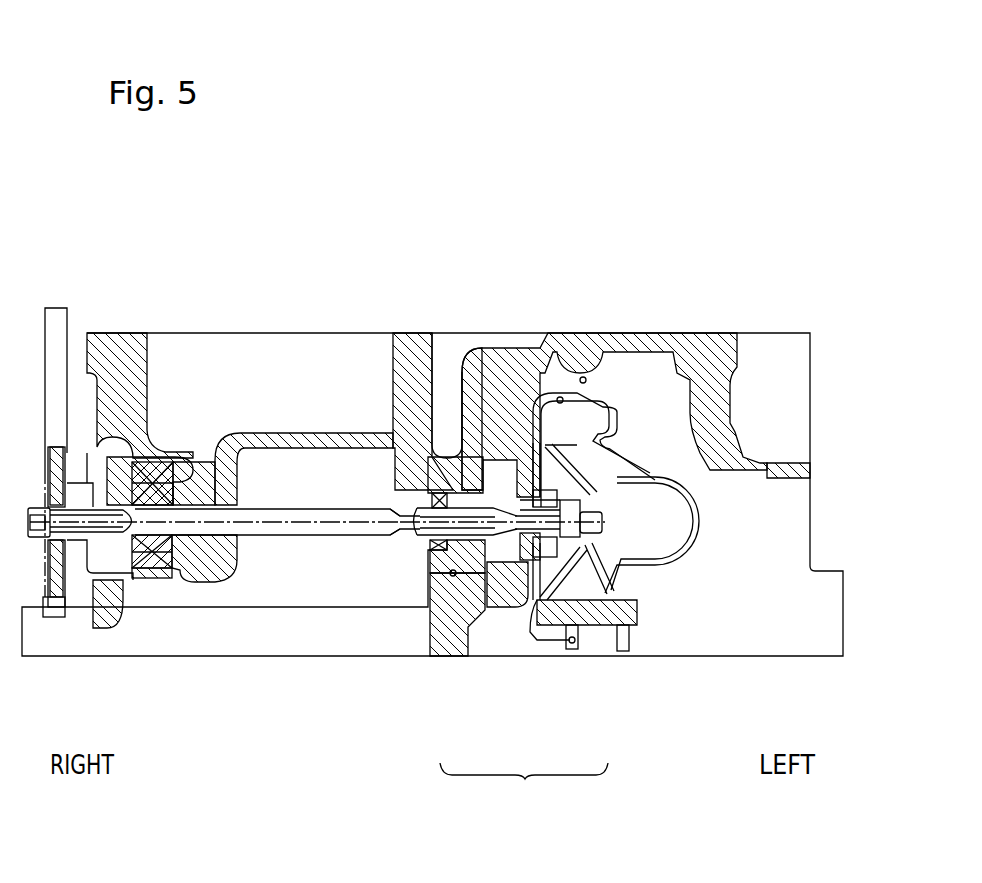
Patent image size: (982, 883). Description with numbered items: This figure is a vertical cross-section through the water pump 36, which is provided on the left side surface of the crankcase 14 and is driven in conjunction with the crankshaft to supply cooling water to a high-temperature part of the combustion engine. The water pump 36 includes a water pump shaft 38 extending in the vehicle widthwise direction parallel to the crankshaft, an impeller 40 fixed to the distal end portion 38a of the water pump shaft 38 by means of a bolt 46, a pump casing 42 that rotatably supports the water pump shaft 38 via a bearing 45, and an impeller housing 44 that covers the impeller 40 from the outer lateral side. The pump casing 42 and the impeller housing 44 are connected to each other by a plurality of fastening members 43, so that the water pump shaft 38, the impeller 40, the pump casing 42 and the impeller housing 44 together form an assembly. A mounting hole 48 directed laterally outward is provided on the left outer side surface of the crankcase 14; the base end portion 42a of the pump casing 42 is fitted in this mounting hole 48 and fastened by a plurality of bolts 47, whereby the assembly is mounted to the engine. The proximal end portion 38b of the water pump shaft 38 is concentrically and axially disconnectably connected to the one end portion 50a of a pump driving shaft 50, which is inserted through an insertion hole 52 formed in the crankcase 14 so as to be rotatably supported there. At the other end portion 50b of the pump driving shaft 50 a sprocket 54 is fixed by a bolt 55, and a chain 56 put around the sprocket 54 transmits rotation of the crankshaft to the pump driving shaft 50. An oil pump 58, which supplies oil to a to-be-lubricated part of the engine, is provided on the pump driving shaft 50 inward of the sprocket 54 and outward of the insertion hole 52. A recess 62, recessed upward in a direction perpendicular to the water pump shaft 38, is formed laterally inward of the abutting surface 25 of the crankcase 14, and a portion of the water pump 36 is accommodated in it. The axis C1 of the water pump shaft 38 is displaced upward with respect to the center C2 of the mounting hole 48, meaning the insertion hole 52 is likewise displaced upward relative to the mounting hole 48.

The crankcase 14 is at (363, 664).
The abutting surface 25 is at (814, 462).
The water pump 36 is at (524, 790).
The water pump shaft 38 is at (497, 545).
The distal end portion 38a is at (582, 507).
The proximal end portion 38b is at (425, 510).
The impeller 40 is at (527, 545).
The pump casing 42 is at (540, 600).
The base end portion 42a is at (445, 630).
The fastening member 43 is at (623, 650).
The impeller housing 44 is at (605, 628).
The bearing 45 is at (443, 492).
The bolt 46 is at (600, 520).
The bolt 47 is at (573, 648).
The mounting hole 48 is at (497, 485).
The pump driving shaft 50 is at (285, 535).
The one end portion 50a is at (377, 535).
The other end portion 50b is at (112, 535).
The insertion hole 52 is at (213, 530).
The sprocket 54 is at (63, 573).
The bolt 55 is at (35, 547).
The chain 56 is at (68, 370).
The oil pump 58 is at (183, 487).
The recess 62 is at (586, 360).
The axis C1 is at (322, 520).
The center C2 is at (425, 538).